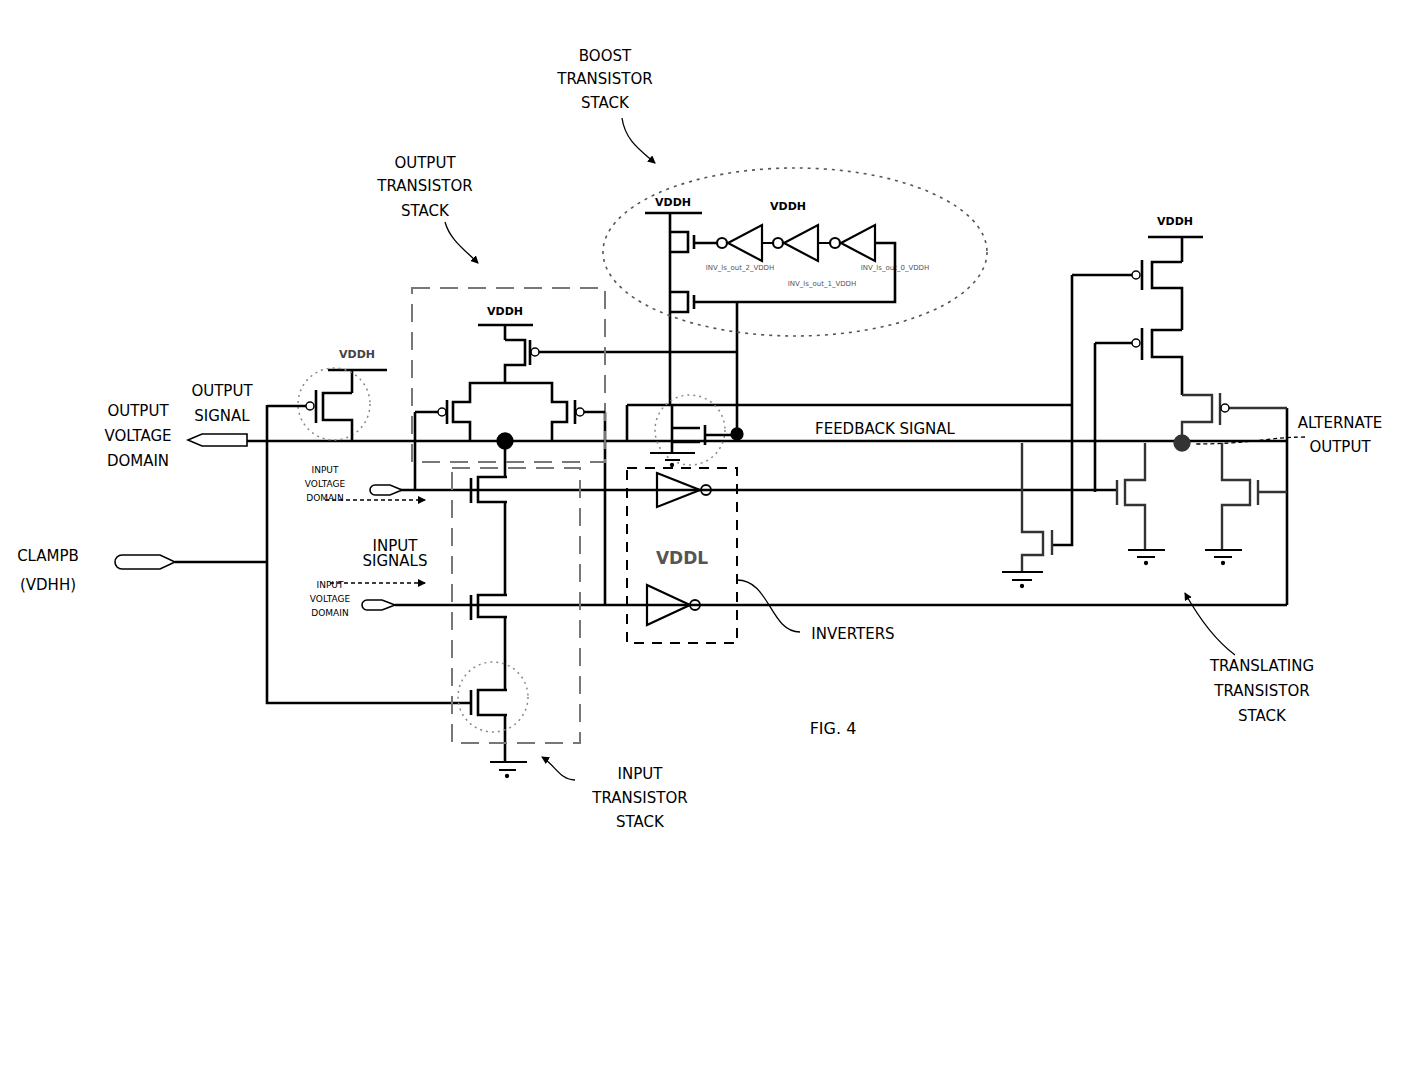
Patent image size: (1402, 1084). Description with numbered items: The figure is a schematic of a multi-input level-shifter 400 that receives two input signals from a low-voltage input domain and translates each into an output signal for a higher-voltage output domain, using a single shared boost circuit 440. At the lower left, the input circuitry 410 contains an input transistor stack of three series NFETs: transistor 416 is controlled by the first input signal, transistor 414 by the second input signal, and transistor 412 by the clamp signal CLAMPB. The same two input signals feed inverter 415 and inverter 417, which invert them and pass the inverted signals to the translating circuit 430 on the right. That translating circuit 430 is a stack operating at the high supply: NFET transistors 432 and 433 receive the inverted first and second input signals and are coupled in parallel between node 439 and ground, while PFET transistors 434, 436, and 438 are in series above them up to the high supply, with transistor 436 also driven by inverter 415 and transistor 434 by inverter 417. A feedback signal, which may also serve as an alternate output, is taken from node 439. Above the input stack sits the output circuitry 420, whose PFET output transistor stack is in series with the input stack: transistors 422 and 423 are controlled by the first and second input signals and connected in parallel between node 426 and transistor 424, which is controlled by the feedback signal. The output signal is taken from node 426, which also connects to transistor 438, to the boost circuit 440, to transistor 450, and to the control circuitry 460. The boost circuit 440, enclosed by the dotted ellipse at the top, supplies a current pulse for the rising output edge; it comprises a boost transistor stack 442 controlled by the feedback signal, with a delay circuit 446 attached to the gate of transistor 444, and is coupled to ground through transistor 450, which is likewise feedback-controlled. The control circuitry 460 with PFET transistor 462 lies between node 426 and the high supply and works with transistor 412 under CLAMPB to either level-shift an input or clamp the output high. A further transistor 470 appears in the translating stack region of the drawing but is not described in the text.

The multi-input level-shifter 400 is at (125, 100).
The input circuitry 410 is at (450, 722).
The transistor 412 is at (510, 690).
The transistor 414 is at (510, 620).
The inverter 415 is at (683, 497).
The transistor 416 is at (507, 505).
The inverter 417 is at (675, 628).
The output circuitry 420 is at (410, 290).
The transistor 422 is at (450, 398).
The transistor 423 is at (587, 405).
The transistor 424 is at (497, 368).
The node 426 is at (510, 432).
The translating circuit 430 is at (1207, 195).
The transistor 432 is at (1145, 507).
The transistor 433 is at (1255, 505).
The transistor 434 is at (1222, 395).
The transistor 436 is at (1185, 330).
The transistor 438 is at (1185, 255).
The node 439 is at (1185, 453).
The boost circuit 440 is at (598, 247).
The boost transistor stack 442 is at (665, 293).
The transistor 444 is at (660, 228).
The delay circuit 446 is at (832, 220).
The transistor 450 is at (728, 450).
The control circuitry 460 is at (320, 378).
The transistor 462 is at (312, 398).
The transistor 470 is at (1045, 556).